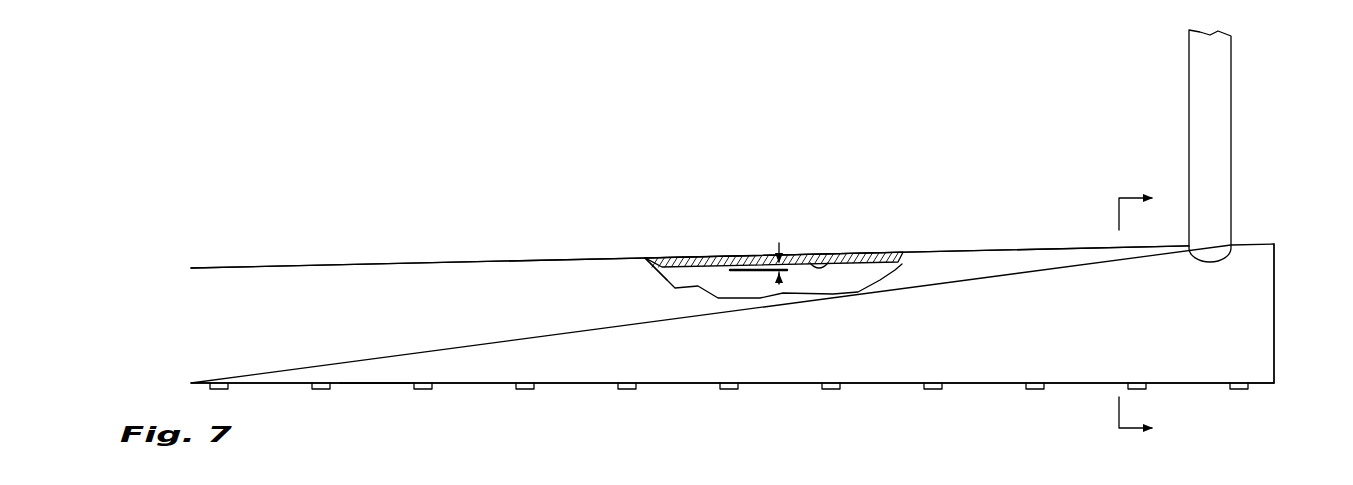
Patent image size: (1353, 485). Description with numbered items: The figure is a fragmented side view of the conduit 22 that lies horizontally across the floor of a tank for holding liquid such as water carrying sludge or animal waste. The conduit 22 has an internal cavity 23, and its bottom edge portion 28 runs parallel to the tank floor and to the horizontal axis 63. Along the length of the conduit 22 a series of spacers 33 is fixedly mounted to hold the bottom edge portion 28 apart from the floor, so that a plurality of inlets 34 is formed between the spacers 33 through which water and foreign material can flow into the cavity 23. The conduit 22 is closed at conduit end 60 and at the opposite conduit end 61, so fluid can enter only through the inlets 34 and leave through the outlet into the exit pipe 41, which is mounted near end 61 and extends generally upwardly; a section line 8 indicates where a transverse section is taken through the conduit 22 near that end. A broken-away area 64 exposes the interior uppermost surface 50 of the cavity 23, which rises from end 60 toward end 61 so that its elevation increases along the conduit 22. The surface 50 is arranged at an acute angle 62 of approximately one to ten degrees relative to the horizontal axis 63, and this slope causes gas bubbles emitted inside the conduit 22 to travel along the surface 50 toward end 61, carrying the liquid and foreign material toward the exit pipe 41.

The section line 8- 8 is at (1147, 315).
The conduit 22 is at (486, 273).
The internal cavity 23 is at (870, 272).
The bottom edge portion 28 is at (697, 385).
The spacers 33 is at (320, 390).
The inlets 34 is at (372, 390).
The exit pipe 41 is at (1203, 116).
The upper surface of the cavity 50 is at (830, 258).
The conduit end 60 is at (216, 278).
The conduit end 61 is at (1245, 313).
The angle 62 is at (778, 250).
The horizontal axis 63 is at (753, 272).
The fragmented view area 64 is at (662, 283).